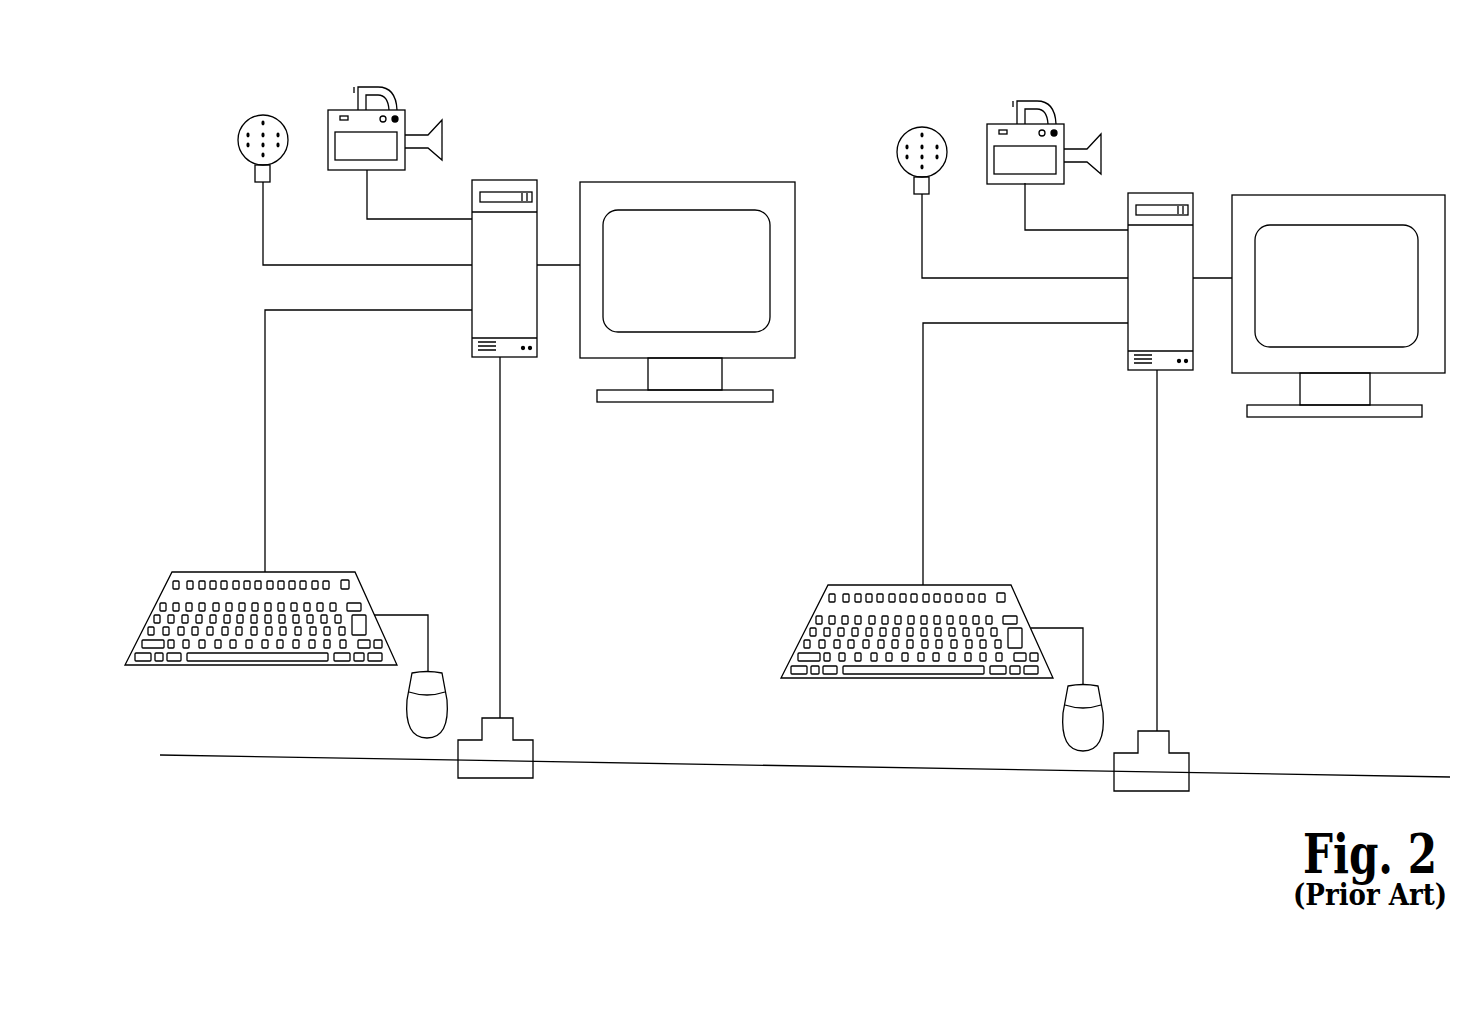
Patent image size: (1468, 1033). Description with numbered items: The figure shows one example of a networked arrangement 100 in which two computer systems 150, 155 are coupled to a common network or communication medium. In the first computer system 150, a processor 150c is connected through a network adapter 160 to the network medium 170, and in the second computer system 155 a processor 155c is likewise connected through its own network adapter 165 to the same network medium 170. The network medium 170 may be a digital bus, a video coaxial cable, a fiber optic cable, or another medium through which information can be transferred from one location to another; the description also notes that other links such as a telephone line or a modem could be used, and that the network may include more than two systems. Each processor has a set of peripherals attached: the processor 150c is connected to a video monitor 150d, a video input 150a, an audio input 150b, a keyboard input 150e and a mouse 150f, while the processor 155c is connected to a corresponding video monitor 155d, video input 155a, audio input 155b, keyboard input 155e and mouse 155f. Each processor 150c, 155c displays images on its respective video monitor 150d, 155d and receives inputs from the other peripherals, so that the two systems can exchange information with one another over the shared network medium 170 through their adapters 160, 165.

The prior art video conferencing network 100 is at (892, 832).
The computer system 150 is at (763, 77).
The video input 150a is at (405, 110).
The audio input 150b is at (287, 125).
The processor 150c is at (502, 180).
The video monitor 150d is at (775, 182).
The keyboard input 150e is at (313, 572).
The mouse 150f is at (445, 690).
The computer system 155 is at (1343, 90).
The video input 155a is at (1065, 125).
The audio input 155b is at (947, 130).
The processor 155c is at (1160, 193).
The video monitor 155d is at (1428, 195).
The keyboard input 155e is at (972, 585).
The mouse 155f is at (1103, 700).
The network adapter 160 is at (522, 740).
The network adapter 165 is at (1183, 755).
The network medium 170 is at (650, 758).